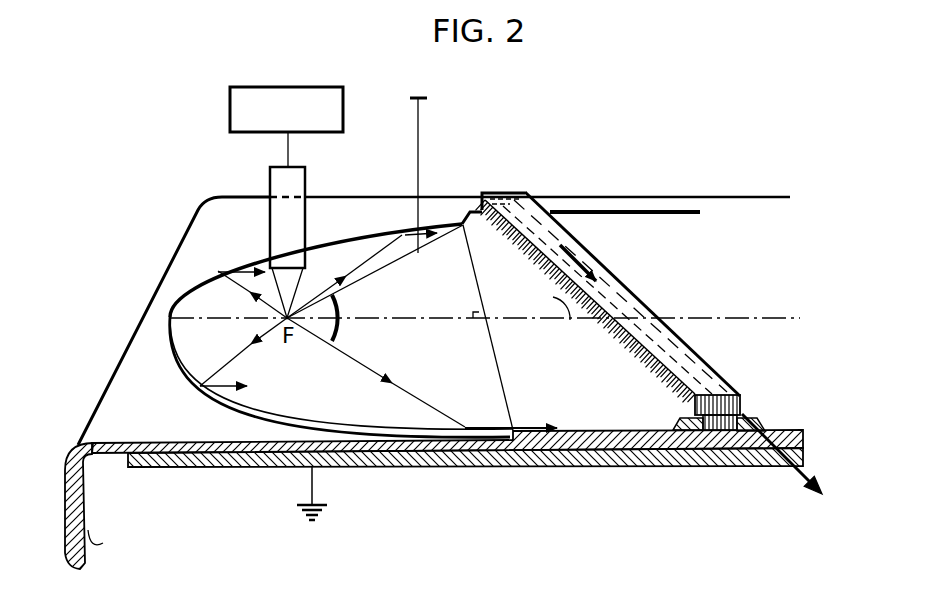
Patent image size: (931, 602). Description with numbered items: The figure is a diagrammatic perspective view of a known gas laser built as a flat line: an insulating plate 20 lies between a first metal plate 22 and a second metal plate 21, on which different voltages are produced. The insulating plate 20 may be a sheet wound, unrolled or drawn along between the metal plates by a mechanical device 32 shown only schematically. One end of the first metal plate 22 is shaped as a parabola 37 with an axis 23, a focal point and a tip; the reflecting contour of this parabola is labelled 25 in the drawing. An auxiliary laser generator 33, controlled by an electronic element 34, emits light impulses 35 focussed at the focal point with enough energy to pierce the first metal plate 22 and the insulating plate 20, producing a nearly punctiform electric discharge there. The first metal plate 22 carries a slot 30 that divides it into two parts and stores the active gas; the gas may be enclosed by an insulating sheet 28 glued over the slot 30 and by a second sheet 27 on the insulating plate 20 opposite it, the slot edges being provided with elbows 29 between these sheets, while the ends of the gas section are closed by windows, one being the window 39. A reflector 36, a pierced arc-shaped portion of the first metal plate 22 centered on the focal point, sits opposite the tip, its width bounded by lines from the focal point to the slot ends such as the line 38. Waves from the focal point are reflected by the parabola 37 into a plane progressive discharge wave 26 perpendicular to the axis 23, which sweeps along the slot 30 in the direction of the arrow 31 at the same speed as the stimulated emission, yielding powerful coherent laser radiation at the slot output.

The insulating plate 20 is at (83, 487).
The second metal plate 21 is at (203, 460).
The first metal plate 22 is at (193, 305).
The axis 23 is at (743, 318).
The elliptical reflector 25 is at (320, 252).
The progressive discharge wave 26 is at (475, 272).
The second sheet 27 is at (721, 430).
The insulating sheet 28 is at (727, 393).
The insulating spacer 29 is at (677, 423).
The slot 30 is at (712, 418).
The arrow 31 is at (588, 255).
The mechanical device 32 is at (127, 527).
The auxiliary laser generator 33 is at (280, 180).
The electronic element 34 is at (252, 103).
The light impulses 35 is at (280, 277).
The reflector 36 is at (337, 334).
The parabola 37 is at (247, 405).
The line 38 is at (403, 258).
The window 39 is at (525, 193).